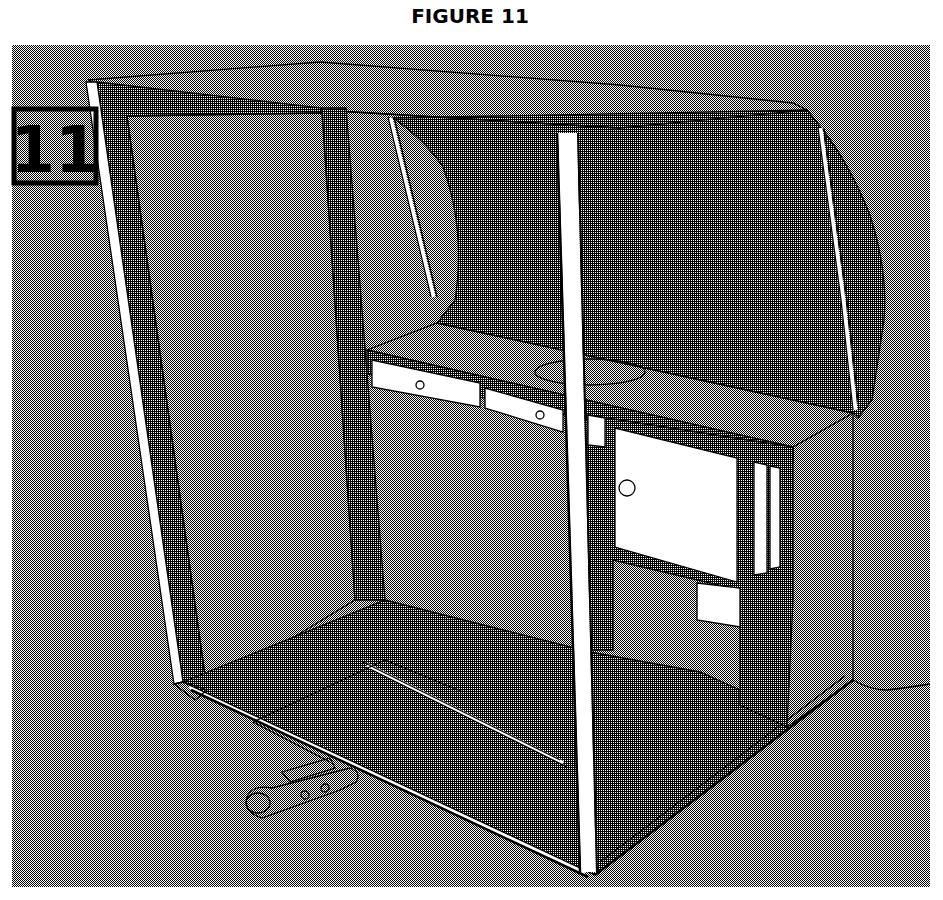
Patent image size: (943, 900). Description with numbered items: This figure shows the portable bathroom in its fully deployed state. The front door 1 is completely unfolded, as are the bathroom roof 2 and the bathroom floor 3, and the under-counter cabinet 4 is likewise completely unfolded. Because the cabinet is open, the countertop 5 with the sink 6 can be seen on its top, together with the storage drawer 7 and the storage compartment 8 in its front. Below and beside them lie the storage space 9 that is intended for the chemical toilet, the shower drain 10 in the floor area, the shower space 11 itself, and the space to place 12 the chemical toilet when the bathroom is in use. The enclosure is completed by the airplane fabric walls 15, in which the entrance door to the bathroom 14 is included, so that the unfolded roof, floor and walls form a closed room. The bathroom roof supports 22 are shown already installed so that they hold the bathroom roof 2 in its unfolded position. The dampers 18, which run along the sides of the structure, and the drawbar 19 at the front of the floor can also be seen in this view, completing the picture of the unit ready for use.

The front door 1 is at (808, 104).
The bathroom roof 2 is at (585, 100).
The bathroom floor 3 is at (185, 690).
The under-counter cabinet 4 is at (812, 677).
The countertop 5 is at (837, 425).
The sink 6 is at (790, 457).
The storage drawer 7 is at (340, 368).
The storage compartment 8 is at (727, 560).
The storage space 9 is at (765, 740).
The shower drain 10 is at (737, 777).
The shower space 11 is at (687, 813).
The space to place the chemical toilet 12 is at (253, 723).
The entrance door to the bathroom 14 is at (197, 245).
The airplane fabric walls 15 is at (311, 480).
The dampers 18 is at (850, 160).
The drawbar 19 is at (246, 800).
The bathroom roof supports 22 is at (160, 580).